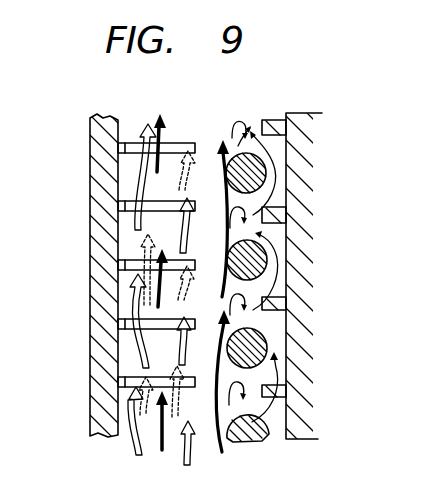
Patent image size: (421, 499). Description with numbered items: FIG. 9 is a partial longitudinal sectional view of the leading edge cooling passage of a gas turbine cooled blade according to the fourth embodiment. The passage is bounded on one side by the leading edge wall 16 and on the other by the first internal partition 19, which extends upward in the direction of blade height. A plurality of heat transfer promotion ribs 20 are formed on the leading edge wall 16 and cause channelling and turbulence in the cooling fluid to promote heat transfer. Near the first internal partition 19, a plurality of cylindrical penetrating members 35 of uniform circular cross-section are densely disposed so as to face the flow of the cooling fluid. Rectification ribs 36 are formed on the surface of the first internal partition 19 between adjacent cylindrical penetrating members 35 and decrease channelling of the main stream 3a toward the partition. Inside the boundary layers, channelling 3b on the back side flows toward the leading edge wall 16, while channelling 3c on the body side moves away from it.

The leading edge wall 16 is at (98, 292).
The first internal partition 19 is at (296, 255).
The heat transfer promotion ribs 20 is at (137, 202).
The cylindrical penetrating members 35 is at (262, 172).
The rectification ribs 36 is at (275, 390).
The main stream 3a is at (223, 450).
The channelling on the back side 3b is at (135, 345).
The channelling on the body side 3c is at (143, 245).